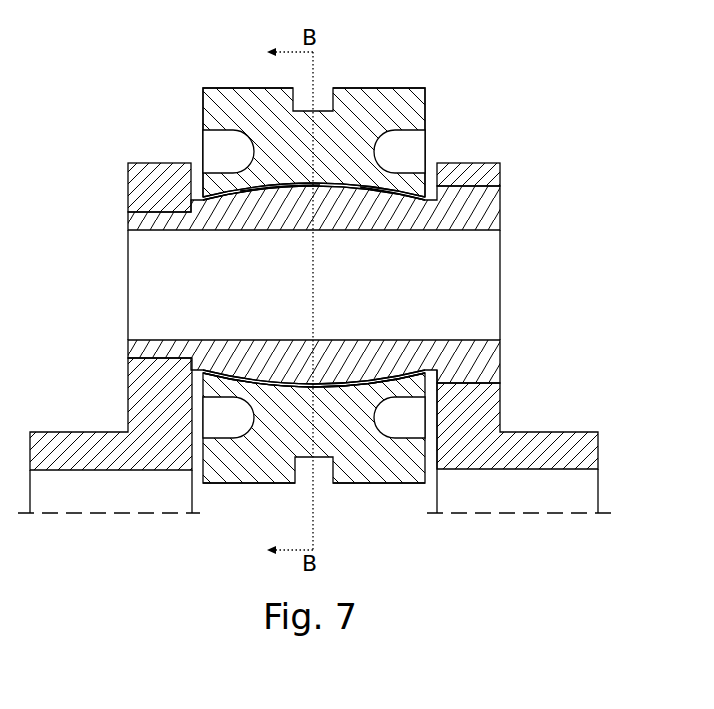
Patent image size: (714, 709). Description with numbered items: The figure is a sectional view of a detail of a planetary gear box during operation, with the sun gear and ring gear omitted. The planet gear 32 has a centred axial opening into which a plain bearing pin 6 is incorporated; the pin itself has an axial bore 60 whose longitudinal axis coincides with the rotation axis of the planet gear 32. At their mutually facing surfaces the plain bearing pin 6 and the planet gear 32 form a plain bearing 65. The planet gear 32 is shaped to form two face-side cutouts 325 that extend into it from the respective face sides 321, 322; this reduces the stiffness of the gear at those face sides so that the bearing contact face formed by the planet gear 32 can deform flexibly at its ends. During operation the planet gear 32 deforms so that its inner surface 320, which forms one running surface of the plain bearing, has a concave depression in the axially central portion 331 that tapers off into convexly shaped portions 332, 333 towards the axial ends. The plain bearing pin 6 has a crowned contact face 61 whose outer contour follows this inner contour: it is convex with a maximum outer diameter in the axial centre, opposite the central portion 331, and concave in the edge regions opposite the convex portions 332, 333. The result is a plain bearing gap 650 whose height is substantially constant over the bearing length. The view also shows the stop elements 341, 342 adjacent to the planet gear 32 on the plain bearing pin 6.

The plain bearing pin 6 is at (503, 198).
The axial bore 60 is at (488, 297).
The planet gear 32 is at (429, 81).
The inner surface 320 is at (244, 366).
The face side 321 is at (203, 102).
The face side 322 is at (425, 102).
The face-side cutout 325 is at (215, 147).
The axially central portion 331 is at (262, 200).
The convexly shaped portion 332 is at (213, 200).
The convexly shaped portion 333 is at (392, 199).
The first stop 341 is at (129, 184).
The second stop 342 is at (465, 168).
The plain bearing gap 650 is at (331, 195).
The plain bearing 65 is at (253, 483).
The contact face 61 is at (362, 483).